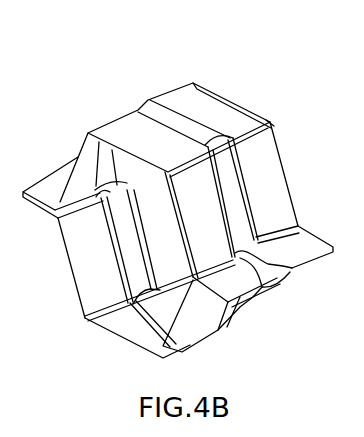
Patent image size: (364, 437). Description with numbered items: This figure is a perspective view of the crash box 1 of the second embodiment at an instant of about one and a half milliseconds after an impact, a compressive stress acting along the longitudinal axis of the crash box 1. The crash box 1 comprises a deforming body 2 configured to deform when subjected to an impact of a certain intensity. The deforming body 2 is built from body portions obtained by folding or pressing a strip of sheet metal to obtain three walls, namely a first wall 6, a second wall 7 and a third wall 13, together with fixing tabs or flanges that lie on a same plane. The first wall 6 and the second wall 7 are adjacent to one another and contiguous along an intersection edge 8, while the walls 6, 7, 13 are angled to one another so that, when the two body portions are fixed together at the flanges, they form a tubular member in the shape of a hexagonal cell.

The crash box 1 is at (170, 189).
The deforming body 2 is at (170, 189).
The first wall 6 is at (249, 106).
The second wall 7 is at (288, 179).
The intersection edge 8 is at (271, 119).
The third wall 13 is at (83, 137).